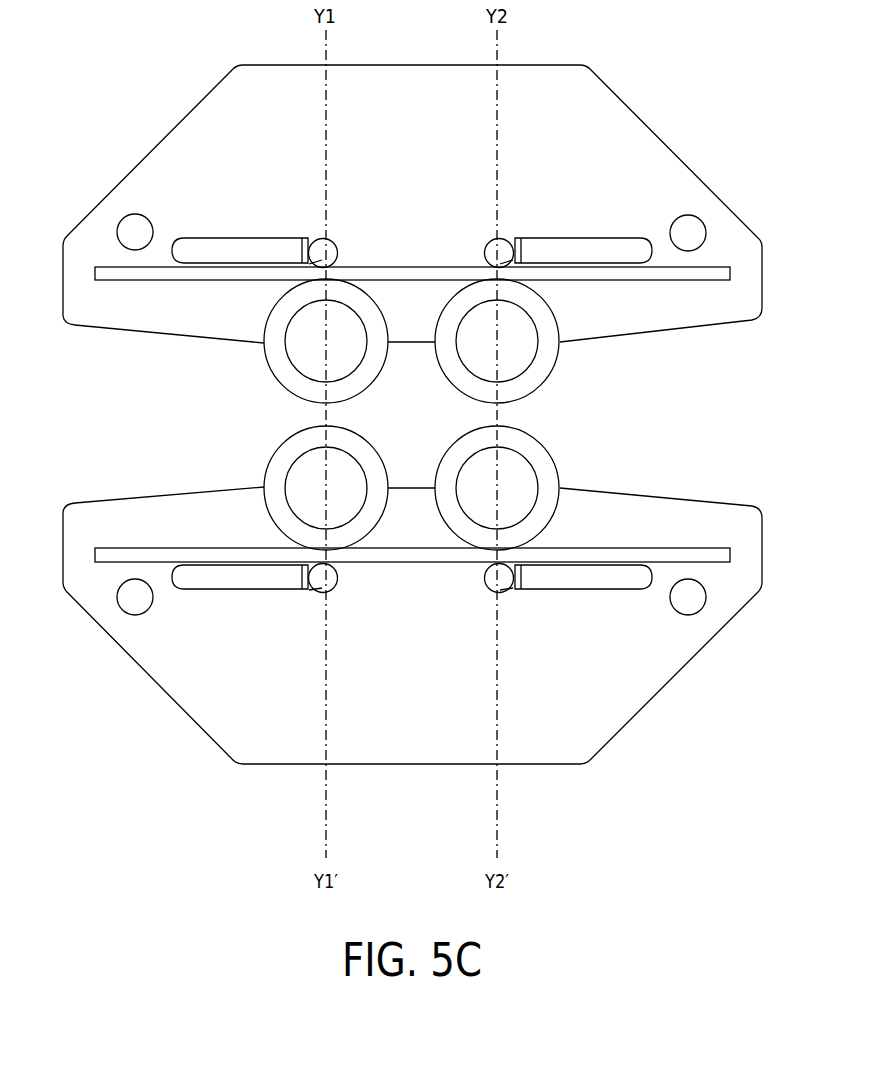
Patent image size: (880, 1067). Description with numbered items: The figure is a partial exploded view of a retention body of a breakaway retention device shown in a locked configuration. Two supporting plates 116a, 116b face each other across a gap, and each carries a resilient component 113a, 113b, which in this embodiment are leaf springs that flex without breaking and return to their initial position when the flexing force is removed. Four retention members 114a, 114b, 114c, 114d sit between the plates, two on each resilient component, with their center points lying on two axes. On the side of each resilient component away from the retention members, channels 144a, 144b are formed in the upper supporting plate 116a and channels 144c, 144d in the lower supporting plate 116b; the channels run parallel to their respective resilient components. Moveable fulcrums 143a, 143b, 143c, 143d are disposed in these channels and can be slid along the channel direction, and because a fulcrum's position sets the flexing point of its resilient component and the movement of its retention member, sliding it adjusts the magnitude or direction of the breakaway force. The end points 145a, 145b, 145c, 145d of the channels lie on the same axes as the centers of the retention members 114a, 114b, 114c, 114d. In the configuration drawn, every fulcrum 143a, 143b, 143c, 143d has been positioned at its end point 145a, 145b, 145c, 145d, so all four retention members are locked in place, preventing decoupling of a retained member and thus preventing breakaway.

The resilient component 113a is at (695, 274).
The resilient component 113b is at (697, 557).
The retention member 114a is at (276, 367).
The retention member 114b is at (537, 373).
The retention member 114c is at (276, 473).
The retention member 114d is at (542, 473).
The supporting plate 116a is at (618, 127).
The supporting plate 116b is at (747, 550).
The moveable fulcrum 143a is at (318, 258).
The moveable fulcrum 143b is at (505, 253).
The moveable fulcrum 143c is at (320, 590).
The moveable fulcrum 143d is at (498, 590).
The channel 144a is at (191, 252).
The channel 144b is at (620, 252).
The channel 144c is at (217, 582).
The channel 144d is at (598, 582).
The end point 145a is at (310, 246).
The end point 145b is at (514, 246).
The end point 145c is at (303, 592).
The end point 145d is at (515, 592).